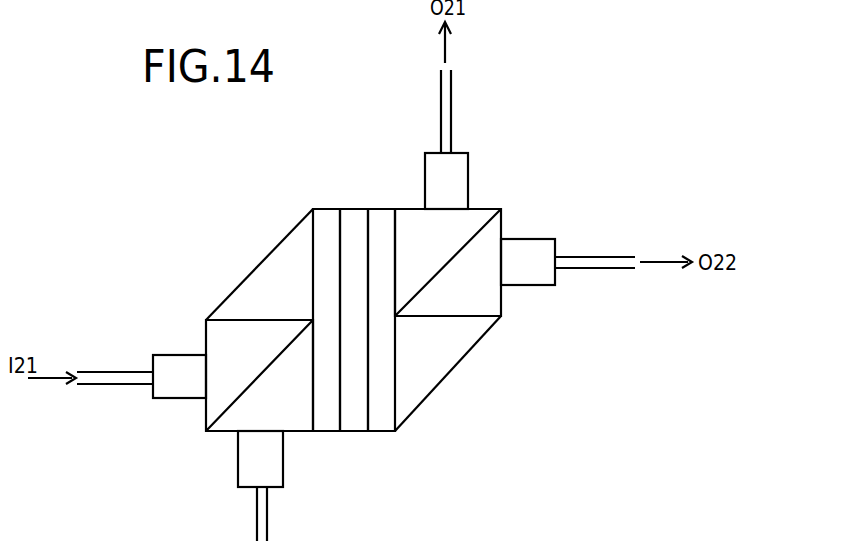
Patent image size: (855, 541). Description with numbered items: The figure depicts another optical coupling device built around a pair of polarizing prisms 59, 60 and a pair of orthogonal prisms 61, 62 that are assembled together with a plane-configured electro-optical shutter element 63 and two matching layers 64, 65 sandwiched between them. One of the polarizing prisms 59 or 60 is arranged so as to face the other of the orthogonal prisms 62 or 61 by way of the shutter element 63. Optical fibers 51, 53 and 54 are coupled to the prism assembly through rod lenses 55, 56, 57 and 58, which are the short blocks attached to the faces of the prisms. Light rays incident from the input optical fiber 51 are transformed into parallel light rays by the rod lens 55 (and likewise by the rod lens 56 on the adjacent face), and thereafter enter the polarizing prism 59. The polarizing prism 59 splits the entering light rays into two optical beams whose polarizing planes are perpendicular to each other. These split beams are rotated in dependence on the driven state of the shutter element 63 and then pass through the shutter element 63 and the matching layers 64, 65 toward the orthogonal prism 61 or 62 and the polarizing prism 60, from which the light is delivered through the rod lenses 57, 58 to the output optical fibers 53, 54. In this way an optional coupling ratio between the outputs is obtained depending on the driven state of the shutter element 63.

The optical fiber 51 is at (114, 392).
The optical fiber 53 is at (463, 109).
The optical fiber 54 is at (597, 250).
The rod lens 55 is at (175, 355).
The rod lens 56 is at (243, 468).
The rod lens 57 is at (460, 173).
The rod lens 58 is at (540, 287).
The polarizing prism 59 is at (207, 437).
The polarizing prism 60 is at (503, 203).
The orthogonal prism 61 is at (253, 270).
The orthogonal prism 62 is at (433, 392).
The electro-optical shutter element 63 is at (357, 209).
The matching layer 64 is at (325, 434).
The matching layer 65 is at (382, 434).